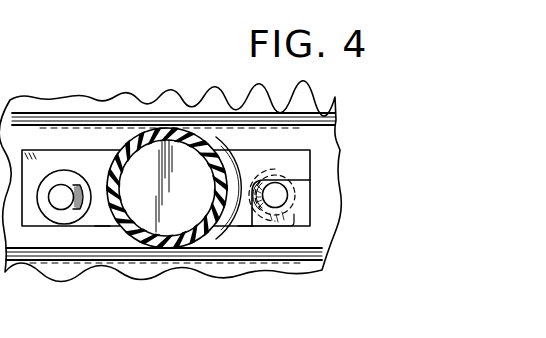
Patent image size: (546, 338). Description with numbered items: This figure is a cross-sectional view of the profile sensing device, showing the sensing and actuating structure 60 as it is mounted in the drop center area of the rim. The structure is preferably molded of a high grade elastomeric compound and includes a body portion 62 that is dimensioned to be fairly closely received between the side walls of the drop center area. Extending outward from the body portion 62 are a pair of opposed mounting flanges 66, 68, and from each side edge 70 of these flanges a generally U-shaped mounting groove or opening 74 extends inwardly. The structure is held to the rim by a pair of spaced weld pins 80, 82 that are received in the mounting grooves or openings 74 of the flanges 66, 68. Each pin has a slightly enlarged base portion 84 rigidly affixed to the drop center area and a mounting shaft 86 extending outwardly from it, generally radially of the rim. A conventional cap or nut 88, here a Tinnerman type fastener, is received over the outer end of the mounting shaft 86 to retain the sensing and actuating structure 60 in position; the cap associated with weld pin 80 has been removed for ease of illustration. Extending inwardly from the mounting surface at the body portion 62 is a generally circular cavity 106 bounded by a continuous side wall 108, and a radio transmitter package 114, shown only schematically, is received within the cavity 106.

The sensing and actuating structure 60 is at (198, 272).
The body portion 62 is at (218, 141).
The mounting flange 66 is at (277, 152).
The mounting flange 68 is at (47, 157).
The side edge 70 is at (100, 217).
The mounting groove or opening 74 is at (253, 222).
The weld pin 80 is at (295, 192).
The weld pin 82 is at (73, 215).
The base portion 84 is at (282, 218).
The mounting shaft 86 is at (263, 182).
The cap or nut 88 is at (73, 178).
The cavity 106 is at (157, 243).
The side wall 108 is at (152, 151).
The radio transmitter package 114 is at (183, 219).